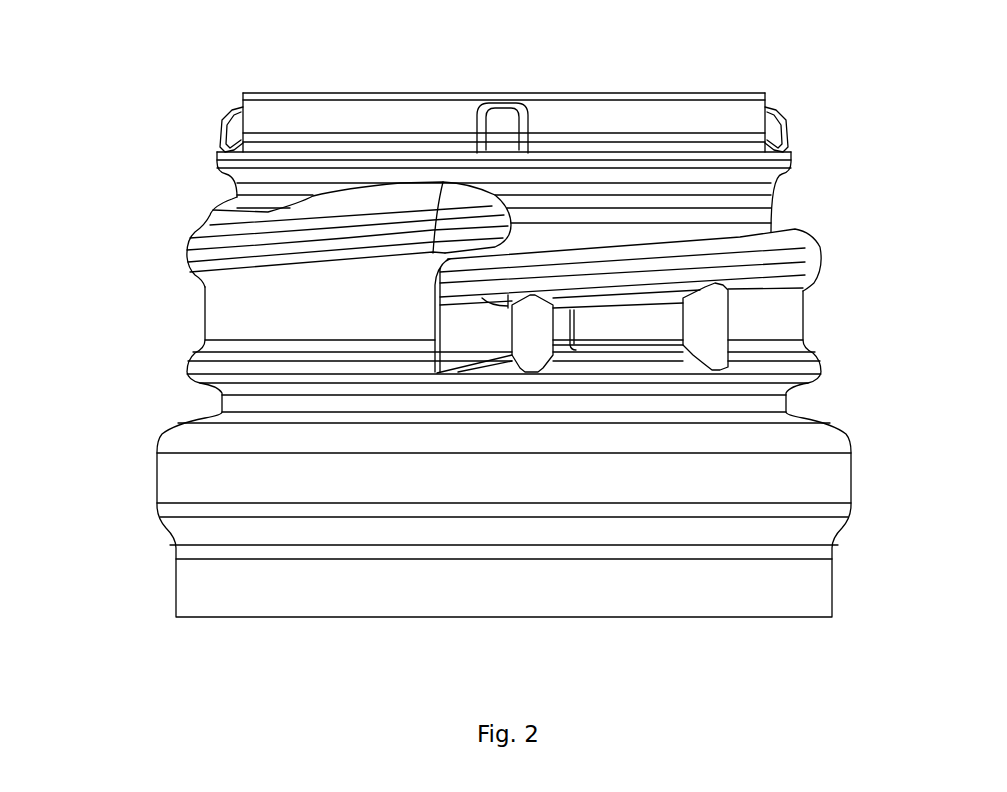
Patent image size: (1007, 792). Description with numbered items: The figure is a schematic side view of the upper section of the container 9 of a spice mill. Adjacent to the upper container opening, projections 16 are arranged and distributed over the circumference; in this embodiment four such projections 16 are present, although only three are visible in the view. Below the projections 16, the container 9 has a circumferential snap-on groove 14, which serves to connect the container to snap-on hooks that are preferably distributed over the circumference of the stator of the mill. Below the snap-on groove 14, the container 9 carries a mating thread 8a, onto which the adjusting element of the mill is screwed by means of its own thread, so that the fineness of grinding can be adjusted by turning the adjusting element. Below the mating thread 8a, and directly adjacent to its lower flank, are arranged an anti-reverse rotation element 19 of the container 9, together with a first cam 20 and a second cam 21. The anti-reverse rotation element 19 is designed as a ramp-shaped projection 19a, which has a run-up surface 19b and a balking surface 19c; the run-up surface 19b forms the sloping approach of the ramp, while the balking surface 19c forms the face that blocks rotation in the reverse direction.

The container 9 is at (176, 104).
The projections 16 is at (508, 138).
The snap-on groove 14 is at (774, 185).
The mating thread 8a is at (823, 250).
The anti-reverse rotation element 19 is at (492, 320).
The ramp-shaped projection 19a is at (450, 358).
The run-up surface 19b is at (480, 335).
The balking surface 19c is at (432, 313).
The first cam 20 is at (540, 332).
The second cam 21 is at (712, 320).